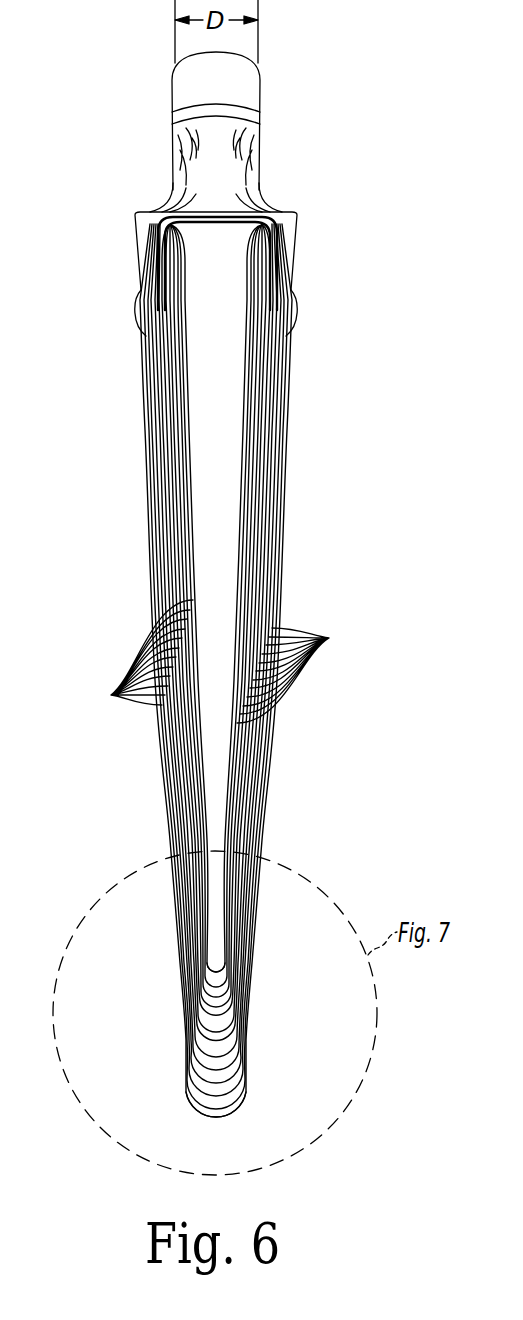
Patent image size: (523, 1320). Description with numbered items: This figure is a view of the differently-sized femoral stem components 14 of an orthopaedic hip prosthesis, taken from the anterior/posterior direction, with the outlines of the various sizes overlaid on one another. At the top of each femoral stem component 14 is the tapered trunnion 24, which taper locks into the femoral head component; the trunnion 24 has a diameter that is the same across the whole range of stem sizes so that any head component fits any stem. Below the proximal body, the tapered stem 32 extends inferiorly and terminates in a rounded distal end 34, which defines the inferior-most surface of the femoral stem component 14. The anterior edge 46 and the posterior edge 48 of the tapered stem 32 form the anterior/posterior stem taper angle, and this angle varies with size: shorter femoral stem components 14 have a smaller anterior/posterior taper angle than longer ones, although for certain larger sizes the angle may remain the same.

The femoral stem component 14 is at (285, 218).
The trunnion 24 is at (253, 86).
The tapered stem 32 is at (205, 1005).
The rounded distal end 34 is at (215, 1121).
The anterior edge 46 is at (297, 675).
The posterior edge 48 is at (138, 654).